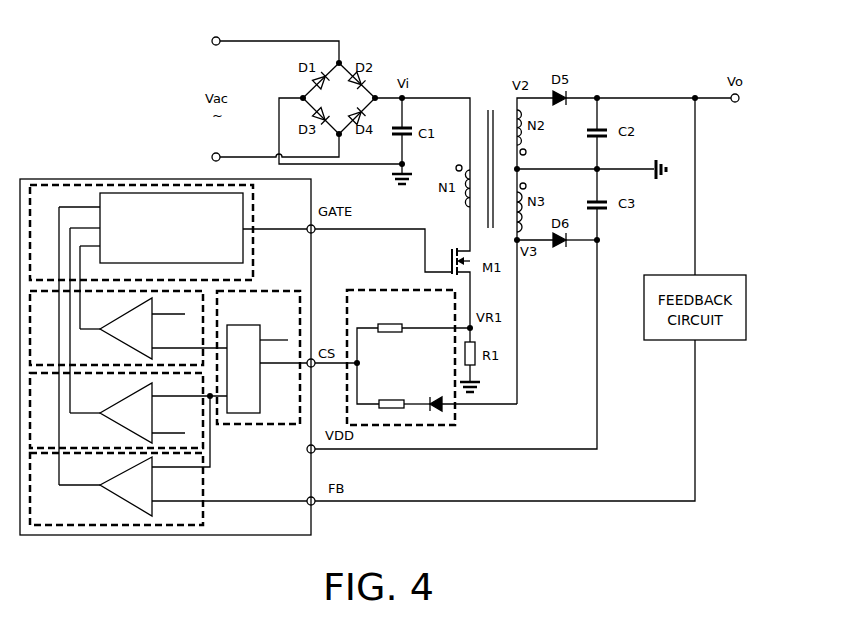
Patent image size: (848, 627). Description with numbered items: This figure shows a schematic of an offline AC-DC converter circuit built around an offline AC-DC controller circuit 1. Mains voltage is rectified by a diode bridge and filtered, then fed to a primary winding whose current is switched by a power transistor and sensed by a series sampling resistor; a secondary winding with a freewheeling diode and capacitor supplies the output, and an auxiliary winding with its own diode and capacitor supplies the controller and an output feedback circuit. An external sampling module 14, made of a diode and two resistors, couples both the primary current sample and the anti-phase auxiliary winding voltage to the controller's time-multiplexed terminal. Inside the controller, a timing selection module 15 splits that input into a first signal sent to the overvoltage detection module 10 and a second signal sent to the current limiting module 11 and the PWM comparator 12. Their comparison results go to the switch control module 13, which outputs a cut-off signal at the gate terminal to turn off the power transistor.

The offline AC-DC controller circuit 1 is at (167, 357).
The overvoltage detection module 10 is at (128, 328).
The current limiting module 11 is at (128, 420).
The PWM comparator 12 is at (168, 489).
The switch control module 13 is at (168, 232).
The external sampling module 14 is at (416, 357).
The timing selection module 15 is at (262, 357).